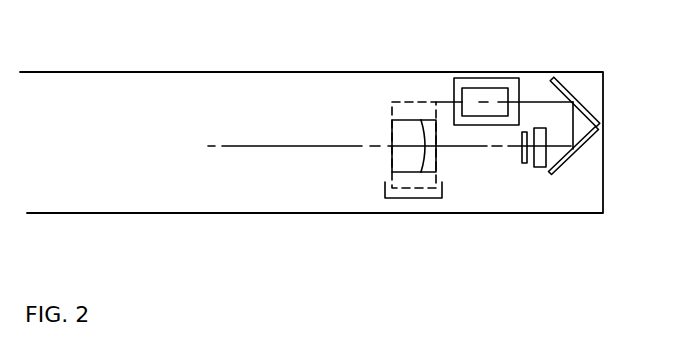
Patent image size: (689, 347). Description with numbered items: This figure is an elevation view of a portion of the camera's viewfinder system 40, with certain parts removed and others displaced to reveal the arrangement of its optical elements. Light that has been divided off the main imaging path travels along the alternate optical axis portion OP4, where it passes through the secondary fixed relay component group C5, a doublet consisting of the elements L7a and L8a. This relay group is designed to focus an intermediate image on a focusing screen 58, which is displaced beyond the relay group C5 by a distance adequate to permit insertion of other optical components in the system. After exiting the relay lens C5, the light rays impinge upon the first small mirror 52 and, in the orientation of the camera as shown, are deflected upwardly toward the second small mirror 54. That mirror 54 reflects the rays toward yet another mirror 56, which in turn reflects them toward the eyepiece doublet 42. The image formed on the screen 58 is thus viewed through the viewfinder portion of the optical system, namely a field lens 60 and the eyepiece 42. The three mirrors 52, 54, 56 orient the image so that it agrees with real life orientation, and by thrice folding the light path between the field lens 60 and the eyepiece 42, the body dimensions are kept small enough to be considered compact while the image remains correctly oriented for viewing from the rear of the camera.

The viewfinder system 40 is at (531, 68).
The eyepiece doublet 42 is at (472, 95).
The third mirror 56 is at (487, 82).
The second small mirror 54 is at (580, 104).
The first small mirror 52 is at (574, 153).
The focusing screen 58 is at (521, 156).
The field lens 60 is at (538, 160).
The alternate optical axis portion OP4 is at (333, 146).
The doublet element L7a is at (396, 160).
The doublet element L8a is at (432, 157).
The secondary fixed relay component group C5 is at (412, 198).